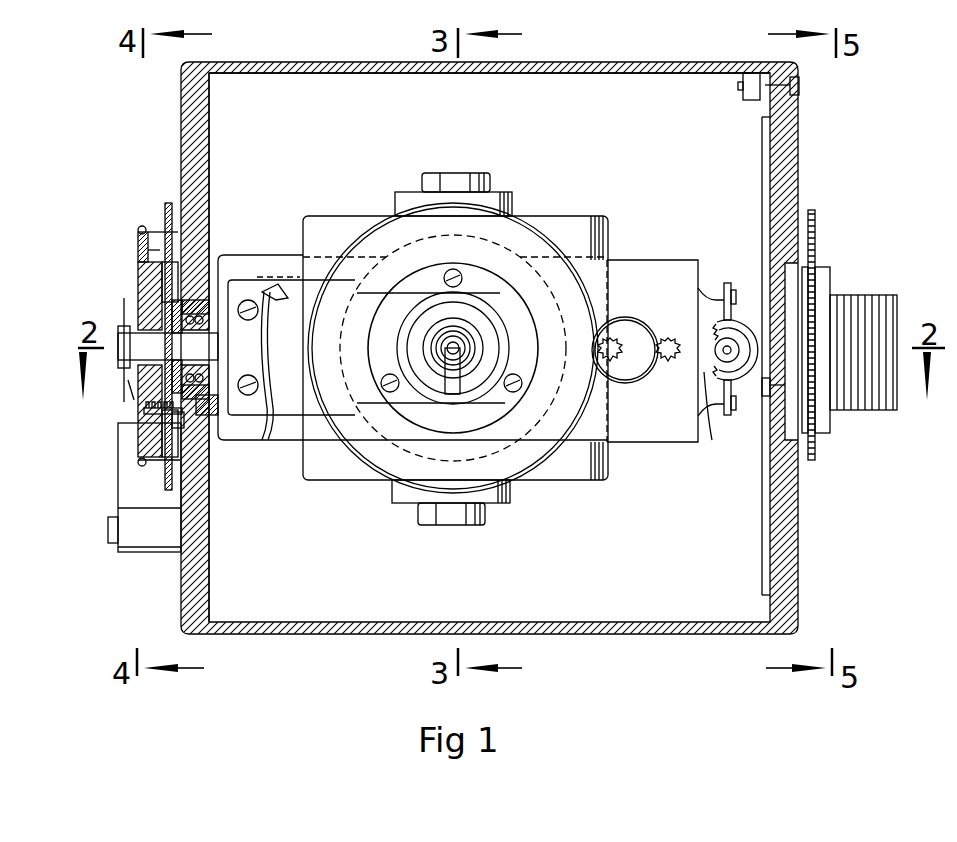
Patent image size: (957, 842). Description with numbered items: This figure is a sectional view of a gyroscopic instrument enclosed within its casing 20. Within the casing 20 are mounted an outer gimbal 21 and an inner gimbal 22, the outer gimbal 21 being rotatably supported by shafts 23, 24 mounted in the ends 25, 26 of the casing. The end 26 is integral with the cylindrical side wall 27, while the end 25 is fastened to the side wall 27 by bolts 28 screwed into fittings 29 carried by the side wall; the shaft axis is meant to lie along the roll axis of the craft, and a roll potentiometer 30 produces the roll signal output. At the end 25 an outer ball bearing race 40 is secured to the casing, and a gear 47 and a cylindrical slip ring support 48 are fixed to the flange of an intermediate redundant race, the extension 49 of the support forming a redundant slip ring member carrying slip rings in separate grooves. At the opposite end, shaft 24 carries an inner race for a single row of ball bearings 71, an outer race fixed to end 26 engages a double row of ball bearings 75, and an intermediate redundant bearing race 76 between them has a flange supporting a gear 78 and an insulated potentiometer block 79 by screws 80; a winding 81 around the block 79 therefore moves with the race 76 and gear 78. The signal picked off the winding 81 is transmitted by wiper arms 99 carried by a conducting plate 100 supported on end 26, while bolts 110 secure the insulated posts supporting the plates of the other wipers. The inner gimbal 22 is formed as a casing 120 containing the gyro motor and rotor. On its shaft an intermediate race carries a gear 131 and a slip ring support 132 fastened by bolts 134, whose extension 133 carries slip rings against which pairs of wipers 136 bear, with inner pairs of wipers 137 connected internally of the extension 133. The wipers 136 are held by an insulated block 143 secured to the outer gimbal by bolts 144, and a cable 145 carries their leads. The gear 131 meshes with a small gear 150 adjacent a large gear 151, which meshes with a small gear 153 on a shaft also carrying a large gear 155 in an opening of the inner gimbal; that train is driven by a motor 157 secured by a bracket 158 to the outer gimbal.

The casing 20 is at (626, 62).
The outer gimbal 21 is at (668, 262).
The inner gimbal 22 is at (608, 238).
The shaft 23 is at (772, 396).
The shaft 24 is at (200, 349).
The end 25 is at (795, 152).
The end 26 is at (206, 190).
The cylindrical side wall 27 is at (688, 62).
The bolts 28 is at (802, 90).
The fittings 29 is at (748, 97).
The roll potentiometer 30 is at (130, 250).
The outer ball bearing race 40 is at (780, 415).
The gear 47 is at (816, 234).
The cylindrical slip ring support 48 is at (826, 268).
The extension 49 is at (898, 300).
The ball bearings 71 is at (198, 382).
The ball bearings 75 is at (216, 408).
The intermediate bearing race 76 is at (222, 256).
The gear 78 is at (188, 480).
The insulated potentiometer block 79 is at (140, 292).
The screws 80 is at (146, 416).
The winding 81 is at (143, 226).
The wiper arms 99 is at (130, 402).
The conducting plate 100 is at (122, 482).
The bolts 110 is at (168, 202).
The casing 120 is at (578, 214).
The gear 131 is at (540, 456).
The slip ring support 132 is at (532, 356).
The extension 133 is at (522, 330).
The bolts 134 is at (470, 262).
The wipers 136 is at (368, 293).
The wipers 137 is at (470, 318).
The insulated block 143 is at (345, 410).
The bolts 144 is at (250, 300).
The cable 145 is at (276, 440).
The small gear 150 is at (614, 344).
The large gear 151 is at (626, 386).
The small gear 153 is at (668, 362).
The large gear 155 is at (713, 446).
The motor 157 is at (728, 310).
The bracket 158 is at (744, 324).